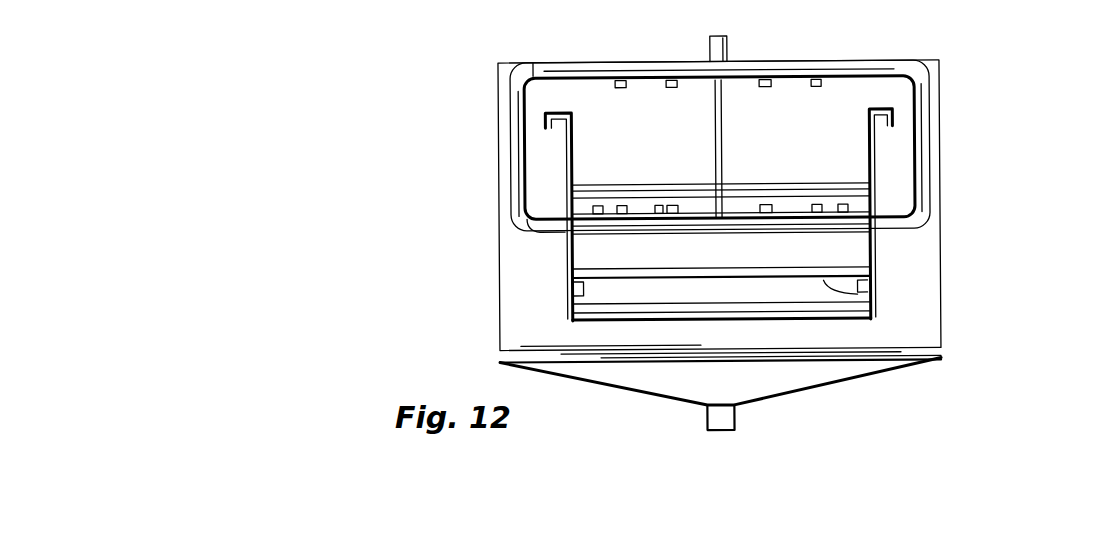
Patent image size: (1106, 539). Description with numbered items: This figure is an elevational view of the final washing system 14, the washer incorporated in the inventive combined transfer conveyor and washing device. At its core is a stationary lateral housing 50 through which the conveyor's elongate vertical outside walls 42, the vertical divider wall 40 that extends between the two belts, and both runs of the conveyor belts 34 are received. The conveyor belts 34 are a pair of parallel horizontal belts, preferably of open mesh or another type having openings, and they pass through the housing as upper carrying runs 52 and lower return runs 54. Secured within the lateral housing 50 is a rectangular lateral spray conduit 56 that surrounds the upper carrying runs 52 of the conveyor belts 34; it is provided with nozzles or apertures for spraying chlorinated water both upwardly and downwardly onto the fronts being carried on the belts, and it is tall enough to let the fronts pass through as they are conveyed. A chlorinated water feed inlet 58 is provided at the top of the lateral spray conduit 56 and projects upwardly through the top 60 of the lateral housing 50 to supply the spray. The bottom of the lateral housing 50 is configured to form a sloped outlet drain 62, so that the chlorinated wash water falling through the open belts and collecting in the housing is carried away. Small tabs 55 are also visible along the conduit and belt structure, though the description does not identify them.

The final washing system 14 is at (952, 88).
The conveyor belts 34 is at (640, 184).
The vertical divider wall 40 is at (722, 123).
The vertical outside walls 42 is at (567, 160).
The lateral housing 50 is at (498, 303).
The carrying runs 52 is at (772, 186).
The return runs 54 is at (877, 295).
The locating tab 55 is at (668, 82).
The lateral spray conduit 56 is at (520, 218).
The chlorinated water feed inlet 58 is at (708, 57).
The top of lateral housing 60 is at (532, 60).
The sloped outlet drain 62 is at (670, 402).